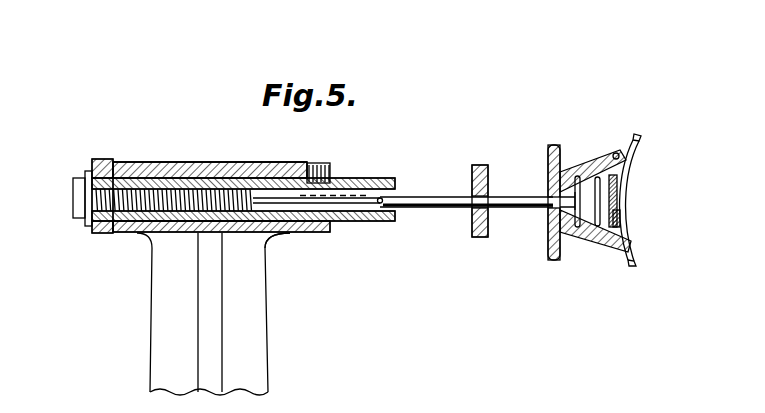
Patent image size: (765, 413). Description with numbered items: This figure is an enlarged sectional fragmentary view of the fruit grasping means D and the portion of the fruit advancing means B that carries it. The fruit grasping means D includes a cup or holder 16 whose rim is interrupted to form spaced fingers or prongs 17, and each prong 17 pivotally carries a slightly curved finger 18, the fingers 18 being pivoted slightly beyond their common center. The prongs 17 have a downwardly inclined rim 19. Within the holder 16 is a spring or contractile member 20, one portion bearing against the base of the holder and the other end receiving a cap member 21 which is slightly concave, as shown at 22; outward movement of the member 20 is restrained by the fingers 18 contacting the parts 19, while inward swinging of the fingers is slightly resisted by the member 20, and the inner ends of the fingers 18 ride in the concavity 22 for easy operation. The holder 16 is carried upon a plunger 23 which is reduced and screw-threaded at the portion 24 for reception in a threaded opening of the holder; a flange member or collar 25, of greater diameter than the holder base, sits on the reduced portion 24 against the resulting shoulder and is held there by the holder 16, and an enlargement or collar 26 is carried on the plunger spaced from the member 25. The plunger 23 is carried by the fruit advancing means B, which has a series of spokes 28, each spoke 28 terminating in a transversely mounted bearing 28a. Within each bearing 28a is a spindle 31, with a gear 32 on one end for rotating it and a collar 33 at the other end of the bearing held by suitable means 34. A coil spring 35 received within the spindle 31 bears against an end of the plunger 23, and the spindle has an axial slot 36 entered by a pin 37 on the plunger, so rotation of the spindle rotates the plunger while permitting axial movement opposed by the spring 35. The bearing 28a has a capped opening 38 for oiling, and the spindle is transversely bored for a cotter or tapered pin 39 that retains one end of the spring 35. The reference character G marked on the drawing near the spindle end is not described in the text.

The cup or holder 16 is at (571, 167).
The fingers or prongs 17 is at (614, 153).
The fingers 18 is at (637, 151).
The downwardly inclined rim 19 is at (637, 146).
The spring or contractile member 20 is at (620, 222).
The cap member 21 is at (620, 180).
The concavity 22 is at (620, 200).
The plunger 23 is at (438, 209).
The reduced portion 24 is at (557, 214).
The flange member or collar 25 is at (553, 145).
The enlargement or collar 26 is at (478, 240).
The spokes 28 is at (247, 305).
The bearing 28a is at (287, 234).
The spindle 31 is at (295, 162).
The gear 32 is at (88, 228).
The collar 33 is at (330, 180).
The suitable means 34 is at (321, 163).
The coil spring 35 is at (136, 233).
The axial slot 36 is at (355, 203).
The pin 37 is at (381, 197).
The capped opening 38 is at (212, 164).
The cotter pin or tapered pin 39 is at (90, 195).
The nut G is at (102, 183).
The fruit advancing means B is at (127, 325).
The fruit grasping means D is at (555, 277).